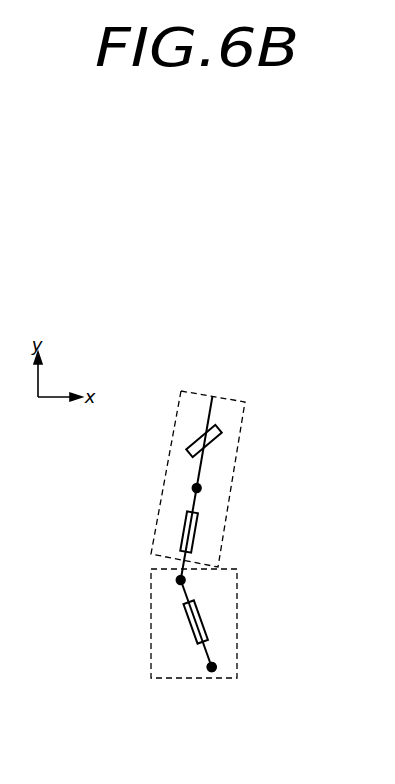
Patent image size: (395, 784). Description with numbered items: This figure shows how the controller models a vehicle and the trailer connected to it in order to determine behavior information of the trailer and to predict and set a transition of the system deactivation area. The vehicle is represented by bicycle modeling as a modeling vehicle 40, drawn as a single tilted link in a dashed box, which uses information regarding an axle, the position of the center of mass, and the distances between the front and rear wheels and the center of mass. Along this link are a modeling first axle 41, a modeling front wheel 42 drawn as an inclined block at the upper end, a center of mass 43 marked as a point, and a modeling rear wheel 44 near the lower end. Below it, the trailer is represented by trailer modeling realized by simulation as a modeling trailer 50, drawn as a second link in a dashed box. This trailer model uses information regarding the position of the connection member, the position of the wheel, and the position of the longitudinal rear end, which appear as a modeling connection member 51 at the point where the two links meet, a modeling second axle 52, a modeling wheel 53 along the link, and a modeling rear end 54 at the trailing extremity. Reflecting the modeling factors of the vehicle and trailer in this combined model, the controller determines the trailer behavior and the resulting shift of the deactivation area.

The modeling vehicle 40 is at (225, 397).
The modeling first axle 41 is at (207, 425).
The modeling front wheel 42 is at (190, 447).
The center of mass 43 is at (192, 488).
The modeling rear wheel 44 is at (184, 530).
The modeling trailer 50 is at (168, 679).
The modeling connection member 51 is at (176, 580).
The modeling second axle 52 is at (208, 650).
The modeling wheel 53 is at (190, 622).
The modeling rear end 54 is at (212, 672).